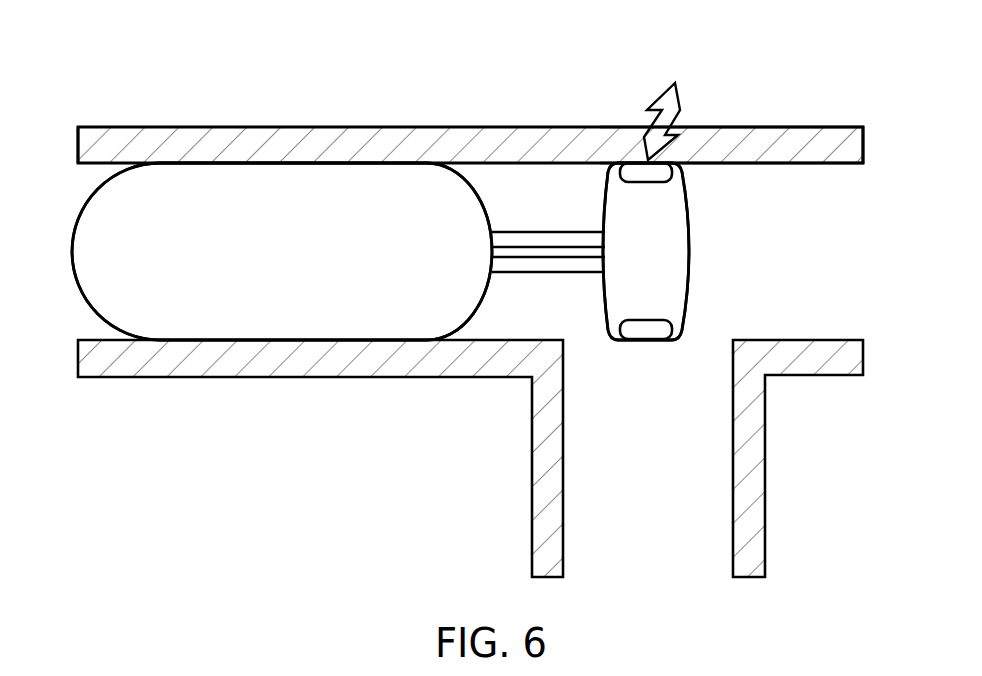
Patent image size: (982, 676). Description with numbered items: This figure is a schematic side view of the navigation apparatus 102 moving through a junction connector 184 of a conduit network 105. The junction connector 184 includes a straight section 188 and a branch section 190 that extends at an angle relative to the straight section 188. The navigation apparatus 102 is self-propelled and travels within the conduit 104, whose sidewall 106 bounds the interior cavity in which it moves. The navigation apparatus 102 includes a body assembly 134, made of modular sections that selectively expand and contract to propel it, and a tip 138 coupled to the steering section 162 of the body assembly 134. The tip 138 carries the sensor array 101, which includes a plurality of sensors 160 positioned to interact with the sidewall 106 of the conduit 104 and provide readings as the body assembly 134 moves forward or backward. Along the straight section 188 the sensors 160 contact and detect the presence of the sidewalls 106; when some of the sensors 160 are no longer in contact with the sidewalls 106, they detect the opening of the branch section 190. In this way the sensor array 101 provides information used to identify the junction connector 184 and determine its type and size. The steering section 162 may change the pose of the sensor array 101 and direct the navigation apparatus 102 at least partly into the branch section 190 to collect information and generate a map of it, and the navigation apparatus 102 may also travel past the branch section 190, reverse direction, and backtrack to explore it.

The sensor array 101 is at (676, 180).
The navigation apparatus 102 is at (343, 180).
The conduit 104 is at (212, 112).
The conduit network 105 is at (627, 104).
The sidewall 106 is at (462, 127).
The body assembly 134 is at (268, 282).
The tip 138 is at (672, 293).
The sensors 160 is at (635, 173).
The steering section 162 is at (590, 250).
The junction connector 184 is at (680, 97).
The straight section 188 is at (97, 127).
The branch section 190 is at (745, 533).